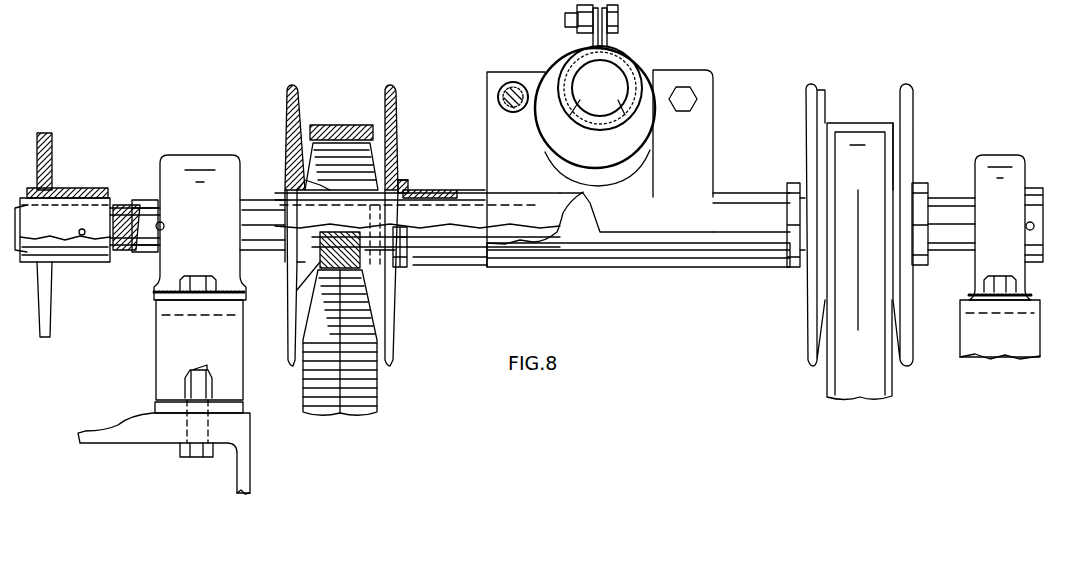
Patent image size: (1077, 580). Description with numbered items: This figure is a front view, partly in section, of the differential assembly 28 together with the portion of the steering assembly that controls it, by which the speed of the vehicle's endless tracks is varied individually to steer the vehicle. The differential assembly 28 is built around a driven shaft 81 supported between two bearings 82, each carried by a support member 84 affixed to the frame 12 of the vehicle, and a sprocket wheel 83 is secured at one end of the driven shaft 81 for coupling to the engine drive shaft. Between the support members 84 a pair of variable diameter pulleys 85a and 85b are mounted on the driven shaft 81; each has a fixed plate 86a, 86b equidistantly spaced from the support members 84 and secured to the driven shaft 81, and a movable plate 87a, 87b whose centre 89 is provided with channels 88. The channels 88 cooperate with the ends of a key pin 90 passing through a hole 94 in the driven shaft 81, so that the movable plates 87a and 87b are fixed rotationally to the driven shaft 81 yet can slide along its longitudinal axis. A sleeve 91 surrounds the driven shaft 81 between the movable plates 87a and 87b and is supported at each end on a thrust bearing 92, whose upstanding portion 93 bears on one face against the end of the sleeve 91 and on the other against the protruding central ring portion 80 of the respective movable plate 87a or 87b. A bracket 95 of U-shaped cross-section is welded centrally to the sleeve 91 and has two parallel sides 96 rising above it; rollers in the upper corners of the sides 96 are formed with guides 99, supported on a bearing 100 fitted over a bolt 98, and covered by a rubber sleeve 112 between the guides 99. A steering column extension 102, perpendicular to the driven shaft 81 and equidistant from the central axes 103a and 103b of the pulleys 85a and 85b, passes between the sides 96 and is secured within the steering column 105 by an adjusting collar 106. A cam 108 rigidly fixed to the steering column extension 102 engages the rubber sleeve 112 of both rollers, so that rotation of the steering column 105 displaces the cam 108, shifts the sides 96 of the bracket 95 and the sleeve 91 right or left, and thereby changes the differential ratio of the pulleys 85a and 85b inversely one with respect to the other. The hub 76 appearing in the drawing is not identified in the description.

The frame 12 is at (246, 446).
The differential assembly 28 is at (108, 187).
The pulley hub 76 is at (342, 123).
The protruding central ring portion 80 is at (400, 160).
The driven shaft 81 is at (251, 203).
The bearings 82 is at (182, 196).
The sprocket wheel 83 is at (52, 152).
The support member 84 is at (160, 383).
The variable diameter pulley 85a is at (276, 121).
The variable diameter pulley 85b is at (922, 142).
The fixed plate 86a is at (290, 298).
The fixed plate 86b is at (913, 157).
The movable plate 87a is at (394, 140).
The movable plate 87b is at (807, 103).
The channels 88 is at (397, 225).
The centre 89 is at (345, 180).
The key pin 90 is at (412, 149).
The sleeve 91 is at (472, 188).
The thrust bearing 92 is at (483, 192).
The upstanding portion 93 is at (422, 192).
The hole 94 is at (402, 263).
The bracket 95 is at (640, 255).
The parallel sides 96 is at (707, 147).
The bolt 98 is at (497, 97).
The guides 99 is at (505, 82).
The bearing 100 is at (532, 48).
The steering column extension 102 is at (566, 106).
The central axis 103a is at (340, 376).
The central axis 103b is at (858, 290).
The steering column 105 is at (613, 108).
The adjusting collar 106 is at (596, 120).
The cam 108 is at (645, 167).
The rubber sleeve 112 is at (559, 26).